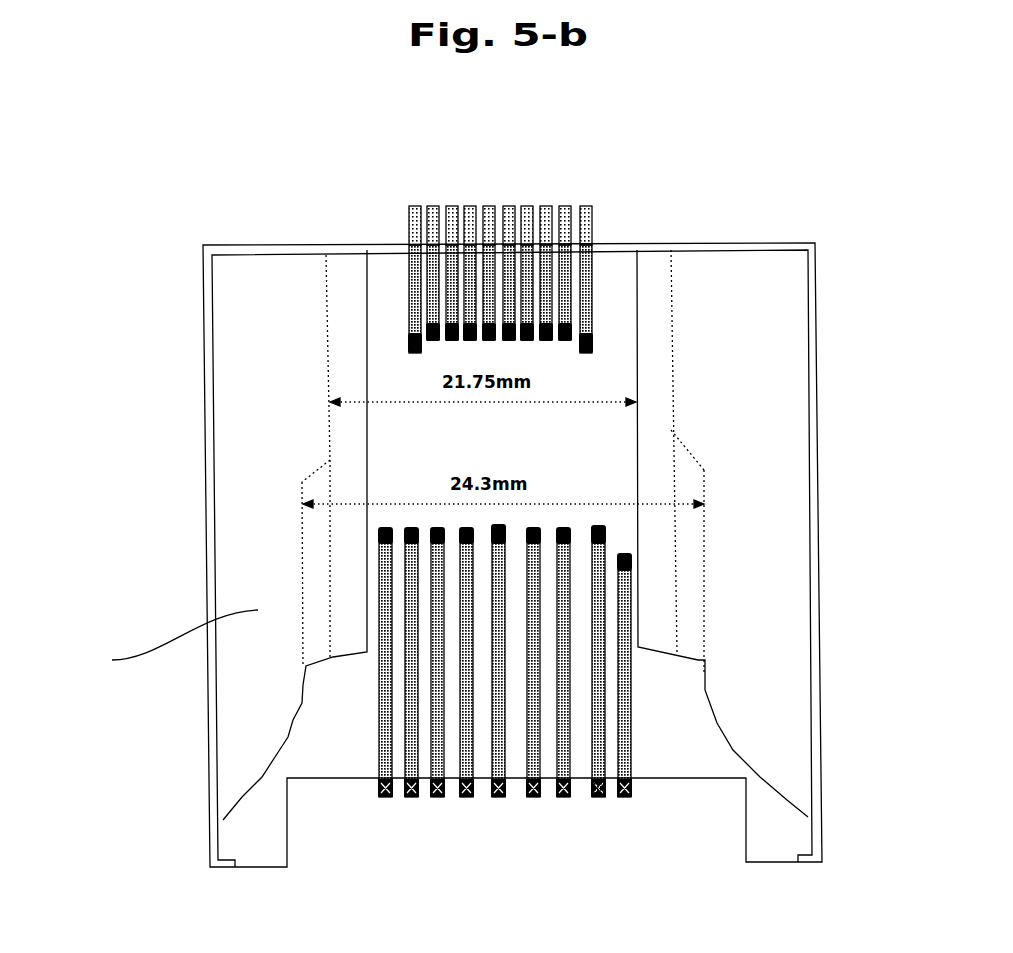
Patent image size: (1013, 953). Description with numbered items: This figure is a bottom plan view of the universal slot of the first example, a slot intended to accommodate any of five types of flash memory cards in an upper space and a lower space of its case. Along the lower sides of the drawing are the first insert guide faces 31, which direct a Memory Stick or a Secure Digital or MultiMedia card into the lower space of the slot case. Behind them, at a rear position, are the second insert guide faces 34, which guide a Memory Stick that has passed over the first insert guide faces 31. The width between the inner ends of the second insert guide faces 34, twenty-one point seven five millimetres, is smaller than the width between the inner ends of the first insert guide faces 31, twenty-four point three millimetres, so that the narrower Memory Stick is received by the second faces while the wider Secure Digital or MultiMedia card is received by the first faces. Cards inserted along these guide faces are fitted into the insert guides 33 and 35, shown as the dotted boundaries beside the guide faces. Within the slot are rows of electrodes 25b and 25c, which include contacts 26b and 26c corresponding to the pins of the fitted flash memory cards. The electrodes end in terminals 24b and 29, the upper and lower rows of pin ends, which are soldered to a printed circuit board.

The terminal 24b is at (545, 210).
The electrode 25b is at (590, 290).
The contact 26b is at (590, 348).
The electrode 25c is at (605, 660).
The contact 26c is at (600, 523).
The terminal 29 is at (573, 793).
The first insert guide face 31 is at (288, 735).
The insert guide 33 is at (302, 522).
The second insert guide face 34 is at (312, 468).
The insert guide 35 is at (323, 360).